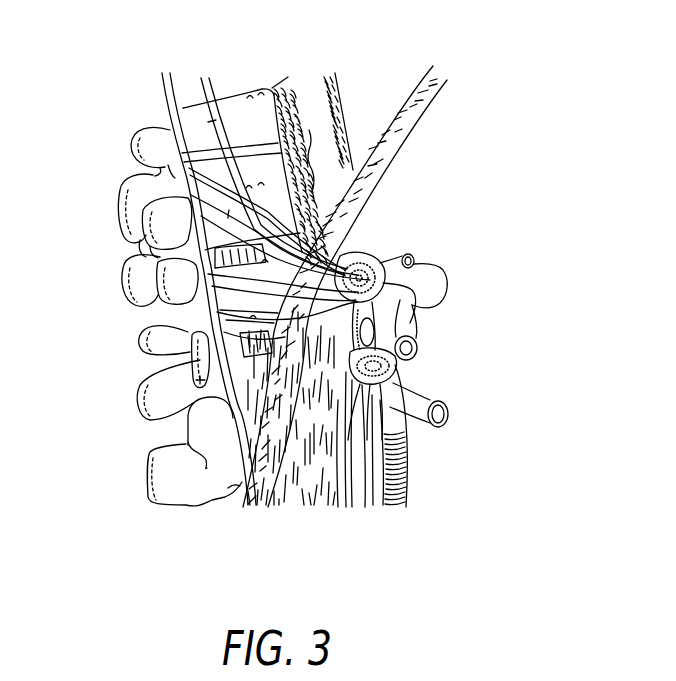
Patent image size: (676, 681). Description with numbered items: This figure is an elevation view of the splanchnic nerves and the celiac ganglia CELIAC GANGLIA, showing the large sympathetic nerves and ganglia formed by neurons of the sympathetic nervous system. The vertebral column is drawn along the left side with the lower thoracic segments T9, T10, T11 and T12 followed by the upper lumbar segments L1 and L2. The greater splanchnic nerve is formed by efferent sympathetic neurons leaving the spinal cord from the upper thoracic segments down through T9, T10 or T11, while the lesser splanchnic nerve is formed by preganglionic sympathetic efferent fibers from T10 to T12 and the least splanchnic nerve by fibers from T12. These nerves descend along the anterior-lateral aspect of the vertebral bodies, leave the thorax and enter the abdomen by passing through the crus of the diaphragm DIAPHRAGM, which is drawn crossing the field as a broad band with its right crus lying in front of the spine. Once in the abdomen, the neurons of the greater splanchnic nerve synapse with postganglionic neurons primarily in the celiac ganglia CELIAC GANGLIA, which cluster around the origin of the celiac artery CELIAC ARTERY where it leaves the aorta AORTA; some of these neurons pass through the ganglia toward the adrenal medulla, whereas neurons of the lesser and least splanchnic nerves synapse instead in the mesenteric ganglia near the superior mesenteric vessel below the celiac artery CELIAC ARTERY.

The thoracic vertebral segment nine T9 is at (153, 144).
The thoracic vertebral segment ten T10 is at (154, 209).
The thoracic vertebral segment eleven T11 is at (163, 273).
The thoracic vertebral segment twelve T12 is at (180, 353).
The first lumbar vertebra L1 is at (191, 414).
The second lumbar vertebra L2 is at (218, 475).
The diaphragm DIAPHRAGM is at (397, 147).
The celiac ganglia CELIAC GANGLIA is at (380, 257).
The celiac artery CELIAC ARTERY is at (447, 305).
The aorta AORTA is at (377, 493).